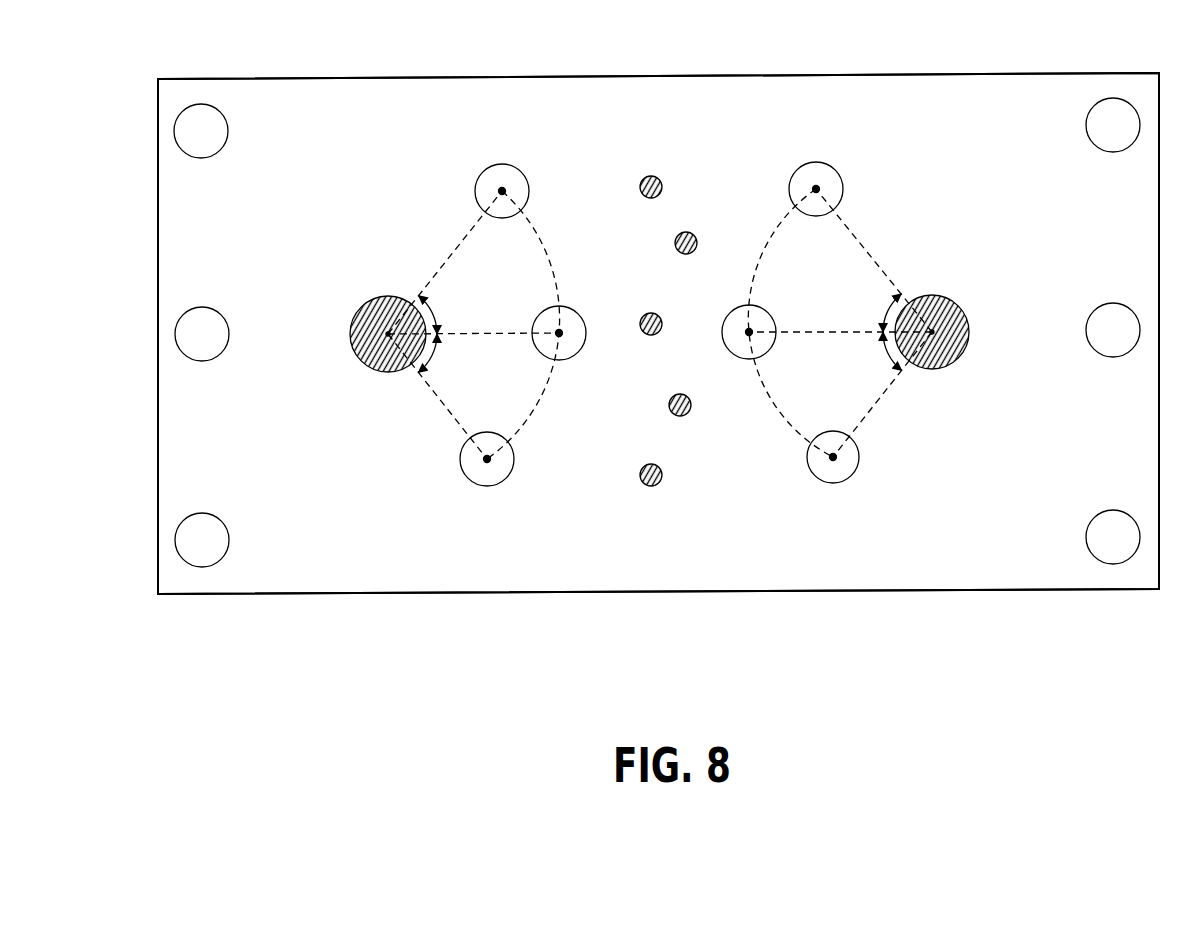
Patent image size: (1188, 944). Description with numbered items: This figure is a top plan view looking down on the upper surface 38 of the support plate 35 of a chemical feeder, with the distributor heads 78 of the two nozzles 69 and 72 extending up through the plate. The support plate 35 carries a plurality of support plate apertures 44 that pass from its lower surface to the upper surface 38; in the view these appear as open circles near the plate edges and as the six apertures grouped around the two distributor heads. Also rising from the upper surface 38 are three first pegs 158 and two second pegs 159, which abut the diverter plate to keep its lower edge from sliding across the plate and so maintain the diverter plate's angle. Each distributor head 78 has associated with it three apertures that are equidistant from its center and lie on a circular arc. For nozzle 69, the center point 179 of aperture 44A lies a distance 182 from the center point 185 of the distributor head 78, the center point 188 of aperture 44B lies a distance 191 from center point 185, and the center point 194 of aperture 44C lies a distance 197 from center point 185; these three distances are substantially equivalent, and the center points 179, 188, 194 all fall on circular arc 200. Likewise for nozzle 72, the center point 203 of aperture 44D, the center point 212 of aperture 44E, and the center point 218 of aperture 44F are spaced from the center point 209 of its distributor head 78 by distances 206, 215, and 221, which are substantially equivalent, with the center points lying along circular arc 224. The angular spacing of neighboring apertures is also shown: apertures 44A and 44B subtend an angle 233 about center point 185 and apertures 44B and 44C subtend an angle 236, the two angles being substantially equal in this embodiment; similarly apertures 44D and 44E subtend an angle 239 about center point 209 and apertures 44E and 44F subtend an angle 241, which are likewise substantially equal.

The support plate 35 is at (946, 590).
The upper surface 38 is at (812, 570).
The support plate apertures 44 is at (208, 118).
The support plate aperture 44A is at (512, 173).
The support plate aperture 44B is at (578, 350).
The support plate aperture 44C is at (507, 463).
The support plate aperture 44D is at (795, 172).
The support plate aperture 44E is at (735, 315).
The support plate aperture 44F is at (830, 470).
The nozzle 69 is at (462, 319).
The nozzle 72 is at (857, 325).
The distributor head 78 is at (352, 340).
The first pegs 158 is at (650, 177).
The second pegs 159 is at (686, 233).
The center point 179 is at (502, 191).
The distance 182 is at (455, 246).
The center point 185 is at (378, 372).
The center point 188 is at (556, 332).
The distance 191 is at (488, 336).
The center point 194 is at (465, 474).
The distance 197 is at (435, 398).
The circular arc 200 is at (548, 244).
The center point 203 is at (816, 189).
The distance 206 is at (865, 245).
The center point 209 is at (932, 332).
The center point 212 is at (749, 332).
The distance 215 is at (843, 336).
The center point 218 is at (833, 457).
The distance 221 is at (882, 405).
The circular arc 224 is at (775, 232).
The angle 233 is at (440, 310).
The angle 236 is at (437, 345).
The angle 239 is at (885, 308).
The angle 241 is at (882, 354).